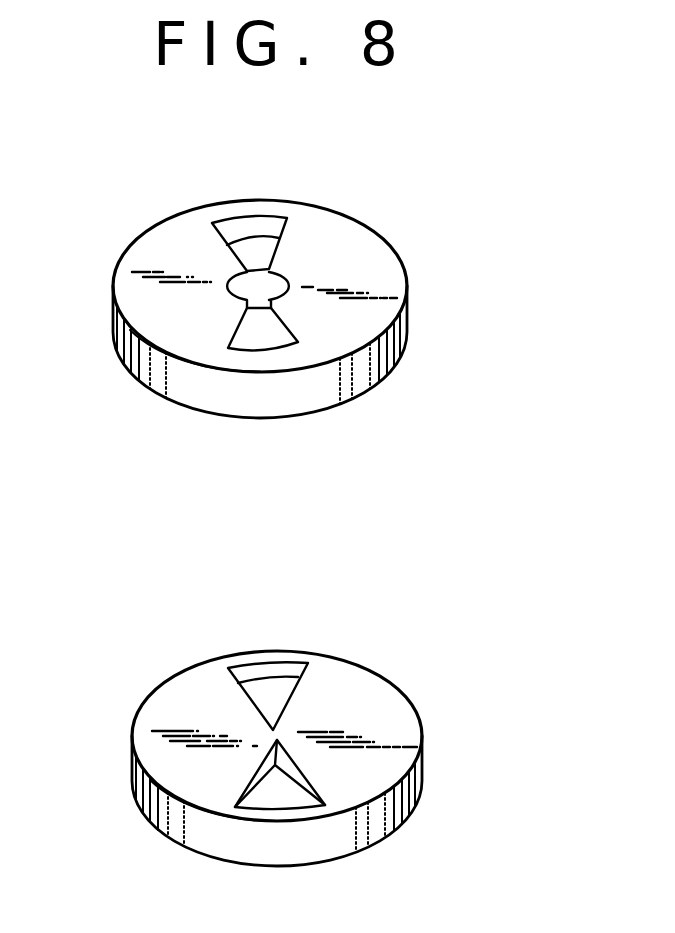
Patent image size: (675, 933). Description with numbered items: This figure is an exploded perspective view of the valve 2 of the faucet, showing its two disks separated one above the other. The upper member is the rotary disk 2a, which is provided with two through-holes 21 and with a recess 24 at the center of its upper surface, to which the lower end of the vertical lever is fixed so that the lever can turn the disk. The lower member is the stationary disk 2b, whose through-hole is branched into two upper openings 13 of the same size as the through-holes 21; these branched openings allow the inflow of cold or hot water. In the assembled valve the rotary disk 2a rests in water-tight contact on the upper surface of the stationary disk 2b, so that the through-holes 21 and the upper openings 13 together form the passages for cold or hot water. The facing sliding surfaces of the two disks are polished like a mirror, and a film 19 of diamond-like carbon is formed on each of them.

The valve 2 is at (438, 432).
The rotary disk 2a is at (407, 320).
The stationary disk 2b is at (422, 770).
The through-holes 21 is at (263, 248).
The recess 24 is at (226, 283).
The film 19 is at (205, 700).
The upper openings 13 is at (268, 703).